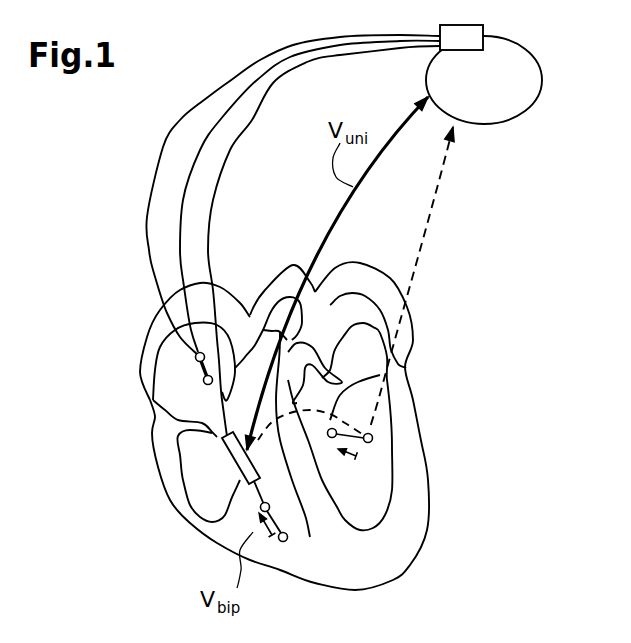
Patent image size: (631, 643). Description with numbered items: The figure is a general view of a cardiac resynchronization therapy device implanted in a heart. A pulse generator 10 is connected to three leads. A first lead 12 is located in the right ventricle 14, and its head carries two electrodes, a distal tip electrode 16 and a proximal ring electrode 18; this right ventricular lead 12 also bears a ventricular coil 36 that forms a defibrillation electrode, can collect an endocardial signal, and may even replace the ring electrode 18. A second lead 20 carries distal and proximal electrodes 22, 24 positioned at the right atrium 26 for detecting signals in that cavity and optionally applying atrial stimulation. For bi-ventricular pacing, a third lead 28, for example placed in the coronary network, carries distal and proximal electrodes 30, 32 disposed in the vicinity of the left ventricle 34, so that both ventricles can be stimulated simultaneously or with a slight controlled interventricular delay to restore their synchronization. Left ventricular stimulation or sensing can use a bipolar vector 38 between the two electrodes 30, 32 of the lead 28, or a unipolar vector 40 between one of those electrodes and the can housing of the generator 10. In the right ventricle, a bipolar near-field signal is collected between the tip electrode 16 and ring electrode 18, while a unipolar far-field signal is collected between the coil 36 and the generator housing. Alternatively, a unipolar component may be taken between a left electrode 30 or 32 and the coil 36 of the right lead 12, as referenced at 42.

The pulse generator 10 is at (533, 77).
The first lead 12 is at (163, 147).
The right ventricle 14 is at (246, 478).
The distal electrode 16 is at (300, 543).
The proximal electrode 18 is at (260, 505).
The second lead 20 is at (185, 200).
The distal electrode 22 is at (203, 378).
The proximal electrode 24 is at (196, 357).
The right atrium 26 is at (198, 410).
The third lead 28 is at (230, 168).
The distal electrode 30 is at (373, 438).
The proximal electrode 32 is at (368, 392).
The left ventricle 34 is at (380, 516).
The ventricular coil 36 is at (248, 475).
The bipolar stimulation vector 38 is at (353, 457).
The unipolar stimulation vector 40 is at (432, 190).
The unipolar vector 42 is at (320, 409).